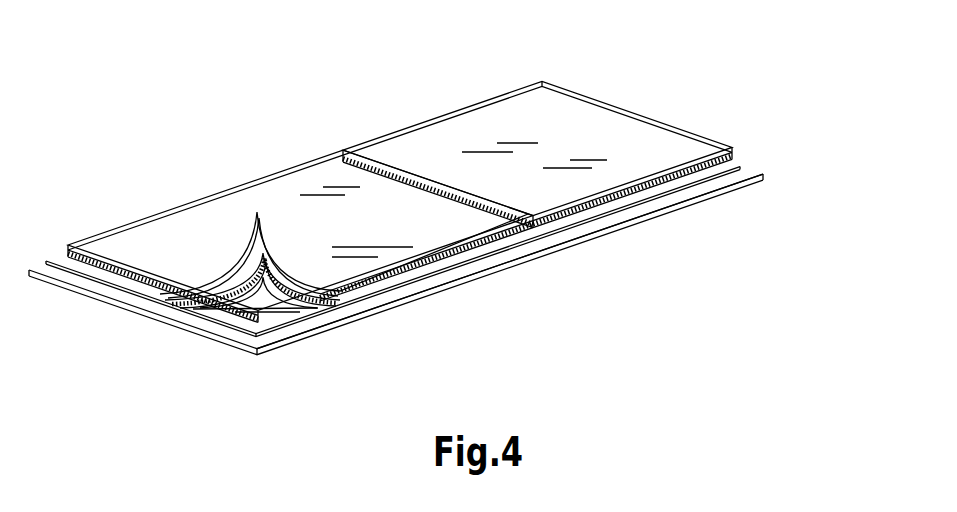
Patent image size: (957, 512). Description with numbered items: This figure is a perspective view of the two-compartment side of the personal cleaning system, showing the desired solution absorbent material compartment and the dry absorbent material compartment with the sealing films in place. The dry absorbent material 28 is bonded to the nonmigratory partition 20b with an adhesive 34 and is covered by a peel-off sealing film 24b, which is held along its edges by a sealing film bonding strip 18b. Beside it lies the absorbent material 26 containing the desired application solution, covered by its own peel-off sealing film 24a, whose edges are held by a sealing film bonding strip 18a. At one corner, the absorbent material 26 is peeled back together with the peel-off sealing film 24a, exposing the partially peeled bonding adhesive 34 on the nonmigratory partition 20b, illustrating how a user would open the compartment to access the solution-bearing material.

The sealing film bonding strip 18a is at (467, 274).
The sealing film bonding strip 18b is at (687, 190).
The nonmigratory partition 20b is at (600, 232).
The peel-off sealing film 24a is at (295, 185).
The peel-off sealing film 24b is at (624, 132).
The absorbent material with desired application solution 26 is at (298, 185).
The dry absorbent material 28 is at (630, 143).
The adhesive 34 is at (265, 298).